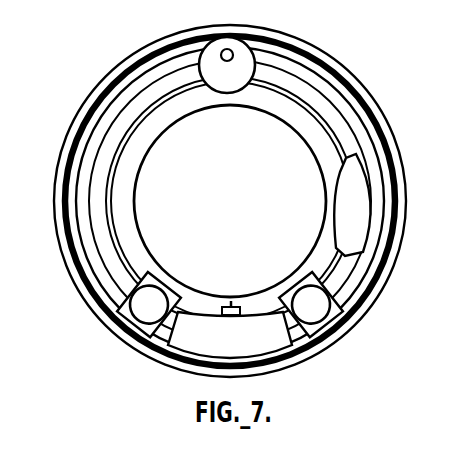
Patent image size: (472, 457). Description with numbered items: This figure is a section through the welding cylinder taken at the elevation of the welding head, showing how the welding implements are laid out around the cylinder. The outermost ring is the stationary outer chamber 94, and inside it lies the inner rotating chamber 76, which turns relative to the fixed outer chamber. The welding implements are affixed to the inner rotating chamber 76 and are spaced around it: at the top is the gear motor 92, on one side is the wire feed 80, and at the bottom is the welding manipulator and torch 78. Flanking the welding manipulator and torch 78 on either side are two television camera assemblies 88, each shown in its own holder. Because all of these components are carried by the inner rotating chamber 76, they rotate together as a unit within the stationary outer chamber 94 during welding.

The stationary outer chamber 94 is at (117, 71).
The inner rotating chamber 76 is at (84, 160).
The wire feed 80 is at (372, 221).
The welding manipulator and torch 78 is at (245, 347).
The television camera assemblies 88 is at (112, 300).
The gear motor 92 is at (239, 88).